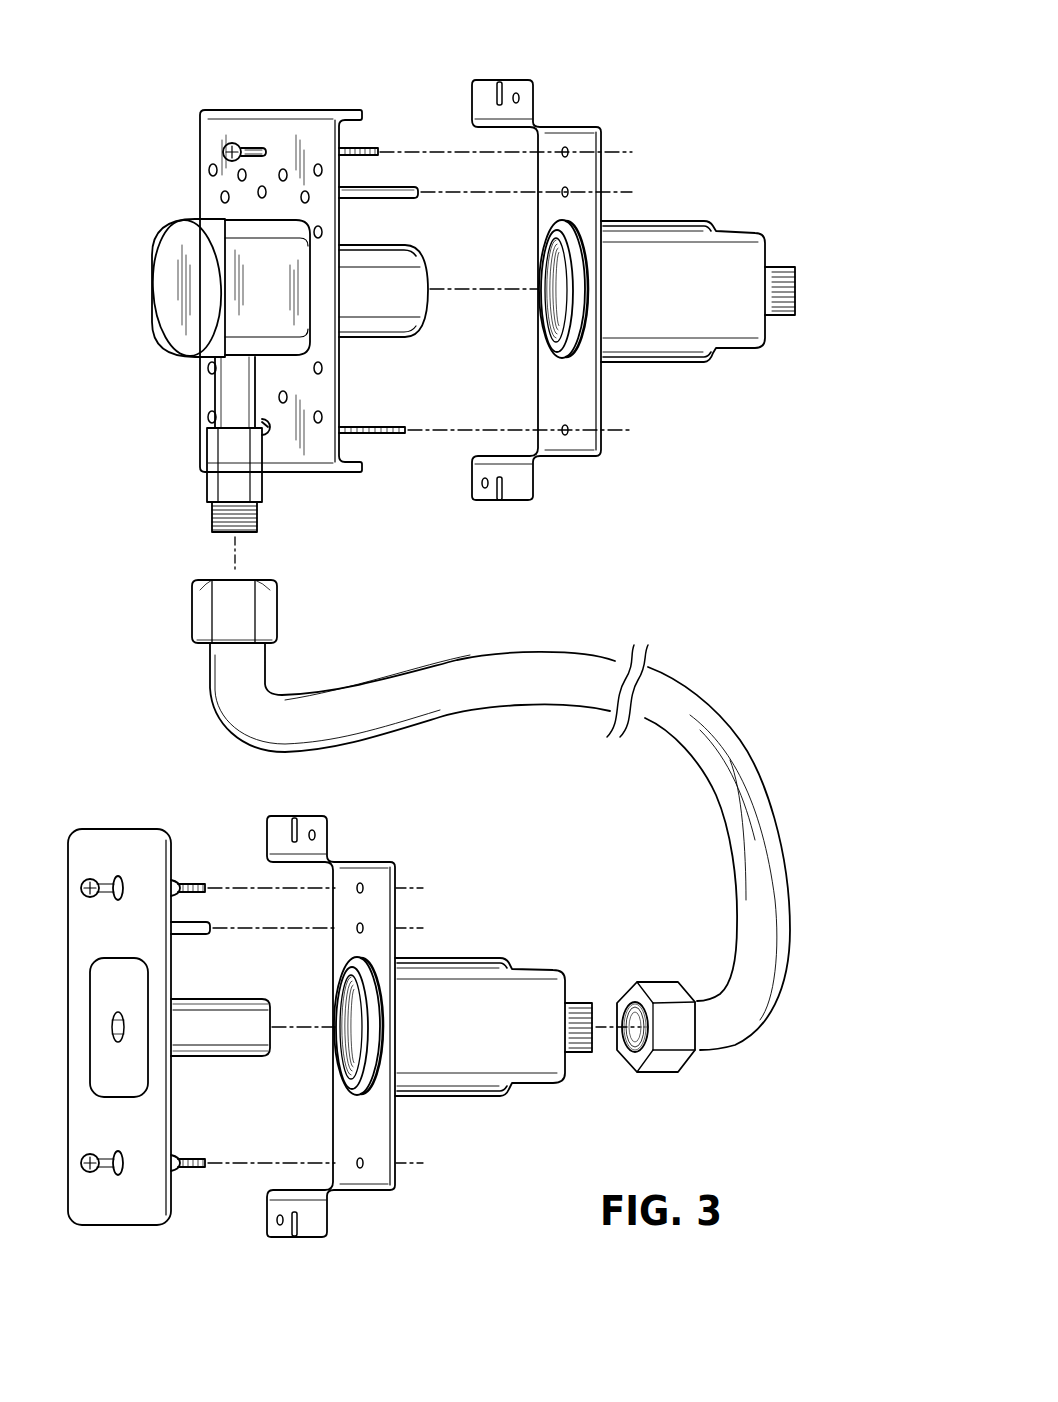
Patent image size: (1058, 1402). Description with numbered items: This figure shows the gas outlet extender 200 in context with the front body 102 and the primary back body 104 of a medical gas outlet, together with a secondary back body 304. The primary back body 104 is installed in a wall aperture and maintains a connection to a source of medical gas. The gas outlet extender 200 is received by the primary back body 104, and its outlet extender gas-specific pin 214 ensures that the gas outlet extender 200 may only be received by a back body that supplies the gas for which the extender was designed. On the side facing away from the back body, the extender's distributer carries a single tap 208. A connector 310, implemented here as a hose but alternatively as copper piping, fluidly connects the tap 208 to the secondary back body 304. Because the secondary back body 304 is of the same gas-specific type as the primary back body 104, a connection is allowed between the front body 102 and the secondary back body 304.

The front body 102 is at (120, 802).
The back body 104 is at (557, 72).
The gas outlet extender 200 is at (287, 72).
The tap 208 is at (228, 485).
The outlet extender gas-specific pin 214 is at (402, 197).
The secondary back body 304 is at (396, 800).
The connector 310 is at (197, 607).